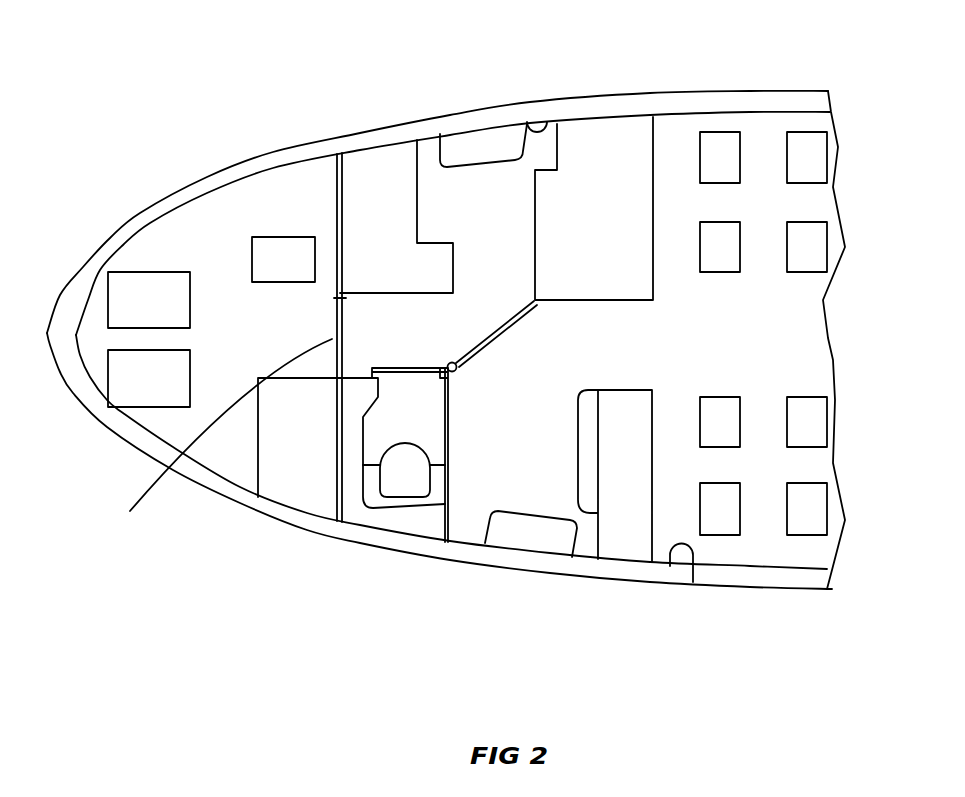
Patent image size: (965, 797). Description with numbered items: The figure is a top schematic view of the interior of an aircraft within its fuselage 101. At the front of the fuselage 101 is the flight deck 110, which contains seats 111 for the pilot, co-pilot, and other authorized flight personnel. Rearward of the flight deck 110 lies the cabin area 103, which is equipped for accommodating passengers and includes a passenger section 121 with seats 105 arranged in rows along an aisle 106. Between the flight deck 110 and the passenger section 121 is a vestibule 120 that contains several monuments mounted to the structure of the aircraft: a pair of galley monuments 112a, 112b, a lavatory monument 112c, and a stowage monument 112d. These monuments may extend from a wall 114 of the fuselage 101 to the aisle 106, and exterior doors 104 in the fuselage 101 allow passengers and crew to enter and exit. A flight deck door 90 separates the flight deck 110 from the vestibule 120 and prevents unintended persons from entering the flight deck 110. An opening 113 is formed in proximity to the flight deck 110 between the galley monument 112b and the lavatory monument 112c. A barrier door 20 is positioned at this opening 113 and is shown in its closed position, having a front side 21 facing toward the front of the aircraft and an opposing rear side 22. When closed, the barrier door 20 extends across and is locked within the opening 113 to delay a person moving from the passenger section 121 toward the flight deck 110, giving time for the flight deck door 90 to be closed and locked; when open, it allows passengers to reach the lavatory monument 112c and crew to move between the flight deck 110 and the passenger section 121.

The fuselage 101 is at (502, 104).
The flight deck 110 is at (205, 247).
The seats 111 is at (136, 310).
The galley monument 112a is at (370, 187).
The galley monument 112b is at (613, 155).
The lavatory monument 112c is at (358, 497).
The stowage monument 112d is at (620, 530).
The vestibule 120 is at (483, 237).
The opening 113 is at (495, 427).
The wall 114 is at (524, 136).
The exterior doors 104 is at (527, 533).
The seats 105 is at (728, 247).
The aisle 106 is at (787, 315).
The passenger section 121 is at (795, 348).
The cabin area 103 is at (815, 466).
The flight deck door 90 is at (224, 340).
The barrier door 20 is at (490, 353).
The front side 21 is at (487, 335).
The rear side 22 is at (510, 328).